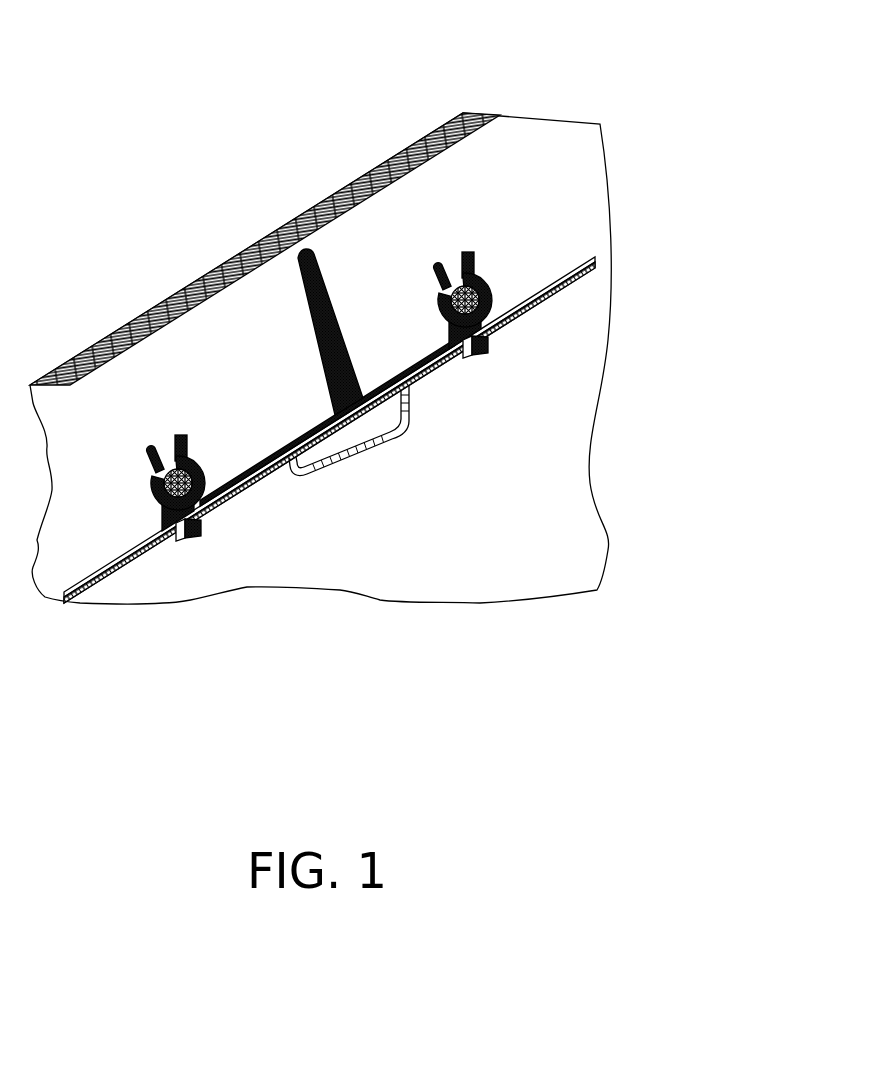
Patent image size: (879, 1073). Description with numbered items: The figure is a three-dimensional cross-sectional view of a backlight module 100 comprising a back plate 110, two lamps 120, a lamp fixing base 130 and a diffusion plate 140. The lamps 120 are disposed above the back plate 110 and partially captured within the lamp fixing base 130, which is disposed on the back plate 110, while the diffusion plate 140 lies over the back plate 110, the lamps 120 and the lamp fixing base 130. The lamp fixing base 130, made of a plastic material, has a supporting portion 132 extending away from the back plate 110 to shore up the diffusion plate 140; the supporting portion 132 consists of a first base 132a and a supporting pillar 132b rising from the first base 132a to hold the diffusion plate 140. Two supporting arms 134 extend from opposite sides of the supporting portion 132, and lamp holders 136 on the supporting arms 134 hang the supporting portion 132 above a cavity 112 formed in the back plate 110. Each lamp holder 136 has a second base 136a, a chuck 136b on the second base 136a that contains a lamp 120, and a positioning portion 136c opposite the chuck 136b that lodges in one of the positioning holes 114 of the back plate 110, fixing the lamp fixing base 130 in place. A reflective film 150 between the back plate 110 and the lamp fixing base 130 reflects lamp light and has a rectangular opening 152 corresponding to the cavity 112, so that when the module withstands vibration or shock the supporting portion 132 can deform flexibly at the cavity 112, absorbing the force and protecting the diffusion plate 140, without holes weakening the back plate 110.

The backlight module 100 is at (735, 640).
The back plate 110 is at (250, 570).
The cavity 112 is at (402, 418).
The positioning holes 114 is at (445, 276).
The lamps 120 is at (168, 503).
The lamp fixing base 130 is at (224, 395).
The supporting portion 132 is at (327, 255).
The first base 132a is at (330, 403).
The supporting pillar 132b is at (332, 312).
The supporting arms 134 is at (204, 468).
The lamp holders 136 is at (611, 303).
The second base 136a is at (578, 300).
The chuck 136b is at (576, 262).
The positioning portion 136c is at (584, 346).
The diffusion plate 140 is at (466, 126).
The reflective film 150 is at (258, 478).
The opening 152 is at (373, 453).